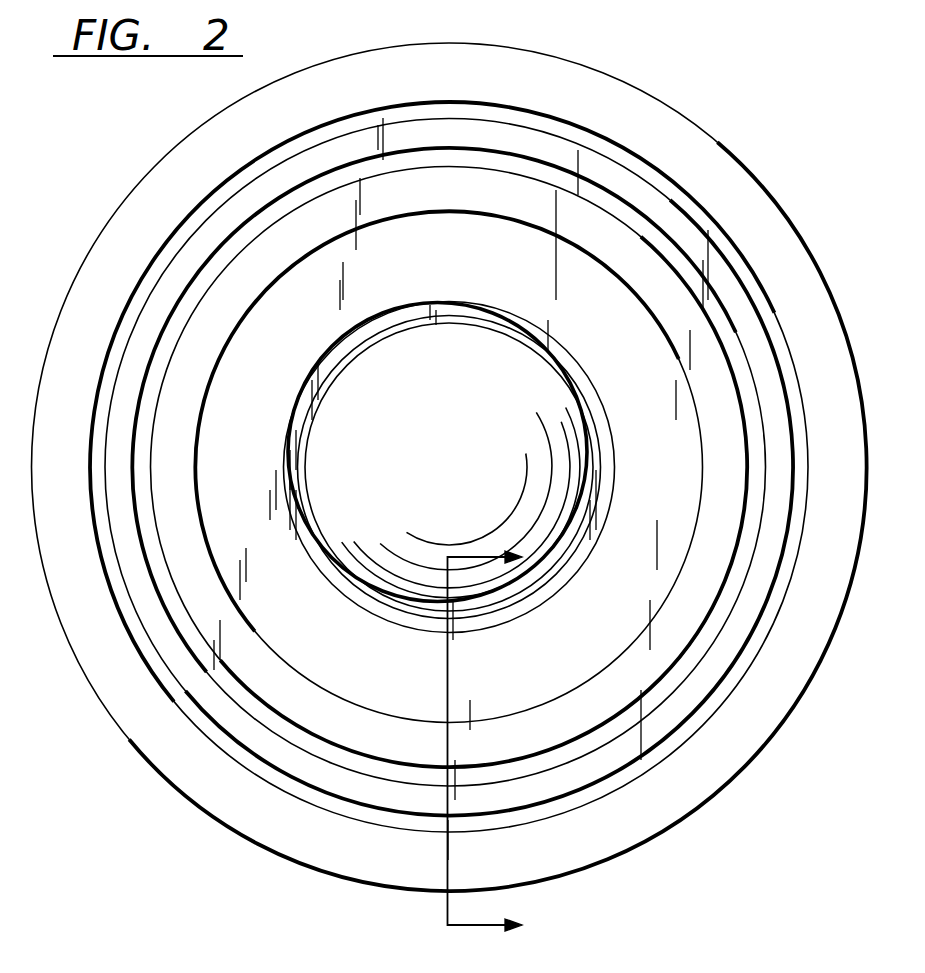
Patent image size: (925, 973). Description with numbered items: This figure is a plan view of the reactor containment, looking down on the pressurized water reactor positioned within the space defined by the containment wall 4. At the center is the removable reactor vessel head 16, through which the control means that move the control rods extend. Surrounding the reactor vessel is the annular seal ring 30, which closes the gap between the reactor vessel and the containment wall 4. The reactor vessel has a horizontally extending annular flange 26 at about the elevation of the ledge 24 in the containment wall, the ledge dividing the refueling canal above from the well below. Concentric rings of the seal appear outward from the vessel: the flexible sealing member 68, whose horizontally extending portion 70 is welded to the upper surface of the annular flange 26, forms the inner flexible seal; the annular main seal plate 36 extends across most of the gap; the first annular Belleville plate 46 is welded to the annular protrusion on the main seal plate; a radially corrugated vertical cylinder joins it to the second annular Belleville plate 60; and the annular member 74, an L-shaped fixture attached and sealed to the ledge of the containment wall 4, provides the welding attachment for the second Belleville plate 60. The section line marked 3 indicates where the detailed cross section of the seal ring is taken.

The containment wall 4 is at (707, 165).
The reactor vessel head 16 is at (412, 439).
The ledge 24 is at (730, 283).
The annular flange 26 is at (578, 392).
The annular seal ring 30 is at (258, 469).
The main seal plate 36 is at (487, 227).
The first annular Belleville plate 46 is at (533, 202).
The second annular Belleville plate 60 is at (622, 210).
The flexible sealing member 68 is at (411, 452).
The horizontally extending portion 70 is at (332, 362).
The annular member 74 is at (753, 267).
The section line 3- 3 is at (485, 743).